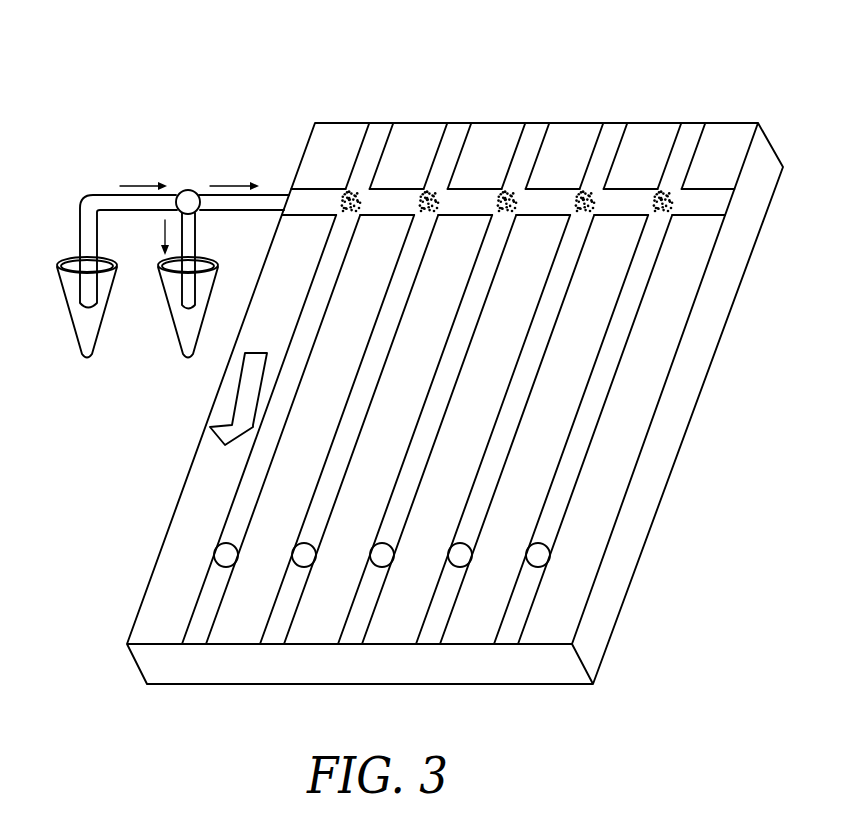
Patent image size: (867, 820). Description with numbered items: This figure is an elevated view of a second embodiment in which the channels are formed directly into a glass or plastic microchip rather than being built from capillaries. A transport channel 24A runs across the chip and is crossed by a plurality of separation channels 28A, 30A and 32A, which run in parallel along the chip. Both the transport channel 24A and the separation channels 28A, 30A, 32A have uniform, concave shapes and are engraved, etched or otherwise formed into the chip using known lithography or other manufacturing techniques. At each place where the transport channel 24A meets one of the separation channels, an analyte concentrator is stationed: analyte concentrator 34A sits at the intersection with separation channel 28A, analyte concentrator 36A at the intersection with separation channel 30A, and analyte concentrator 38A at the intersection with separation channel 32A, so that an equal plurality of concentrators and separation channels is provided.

The transport channel 24A is at (313, 200).
The separation channel 28A is at (380, 122).
The separation channel 30A is at (459, 122).
The separation channel 32A is at (533, 122).
The analyte concentrator 34A is at (348, 192).
The analyte concentrator 36A is at (425, 194).
The analyte concentrator 38A is at (503, 192).